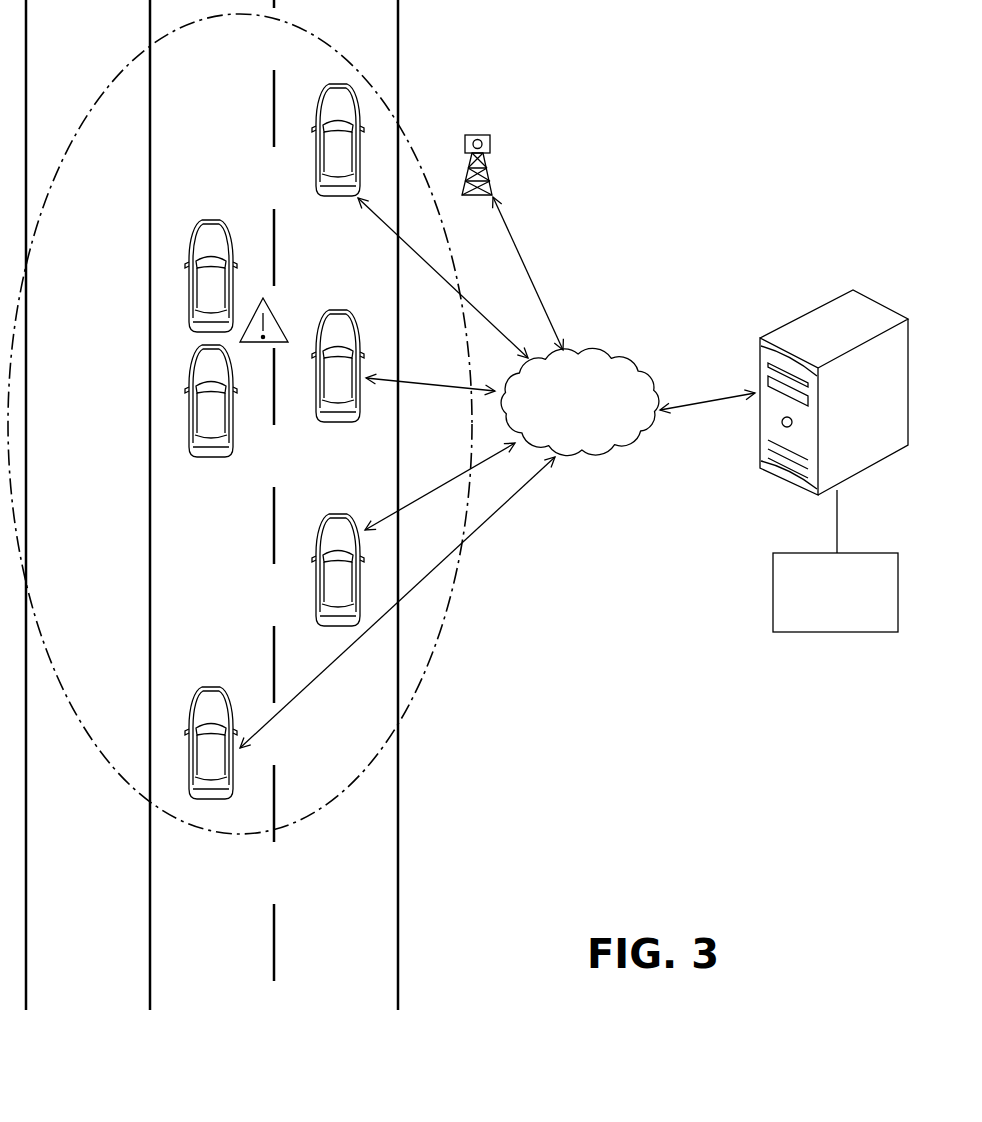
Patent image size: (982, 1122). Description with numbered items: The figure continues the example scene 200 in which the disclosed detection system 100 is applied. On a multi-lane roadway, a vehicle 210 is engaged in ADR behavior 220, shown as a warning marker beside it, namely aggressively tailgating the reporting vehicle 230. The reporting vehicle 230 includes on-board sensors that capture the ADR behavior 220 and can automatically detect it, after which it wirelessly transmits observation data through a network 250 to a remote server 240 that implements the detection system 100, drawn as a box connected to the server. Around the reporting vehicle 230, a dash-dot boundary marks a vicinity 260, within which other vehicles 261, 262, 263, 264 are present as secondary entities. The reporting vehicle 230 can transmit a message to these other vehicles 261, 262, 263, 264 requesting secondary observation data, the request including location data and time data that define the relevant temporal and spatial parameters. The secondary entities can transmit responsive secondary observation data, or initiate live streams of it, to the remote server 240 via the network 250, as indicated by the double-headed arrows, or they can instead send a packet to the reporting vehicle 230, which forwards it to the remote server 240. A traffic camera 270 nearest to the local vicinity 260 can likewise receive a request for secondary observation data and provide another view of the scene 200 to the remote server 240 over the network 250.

The detection system 100 is at (835, 561).
The example scene 200 is at (583, 764).
The vehicle 210 is at (185, 395).
The ADR behavior 220 is at (277, 323).
The vehicle 230 is at (185, 277).
The remote server 240 is at (868, 292).
The network 250 is at (592, 348).
The vicinity 260 is at (97, 752).
The other vehicle 261 is at (185, 737).
The other vehicle 262 is at (364, 562).
The other vehicle 263 is at (364, 362).
The other vehicle 264 is at (365, 138).
The traffic camera 270 is at (482, 135).